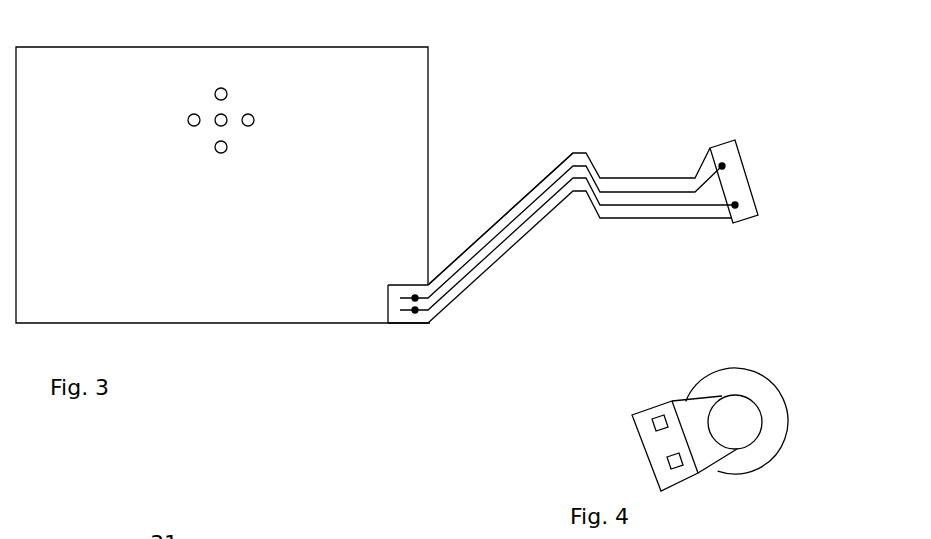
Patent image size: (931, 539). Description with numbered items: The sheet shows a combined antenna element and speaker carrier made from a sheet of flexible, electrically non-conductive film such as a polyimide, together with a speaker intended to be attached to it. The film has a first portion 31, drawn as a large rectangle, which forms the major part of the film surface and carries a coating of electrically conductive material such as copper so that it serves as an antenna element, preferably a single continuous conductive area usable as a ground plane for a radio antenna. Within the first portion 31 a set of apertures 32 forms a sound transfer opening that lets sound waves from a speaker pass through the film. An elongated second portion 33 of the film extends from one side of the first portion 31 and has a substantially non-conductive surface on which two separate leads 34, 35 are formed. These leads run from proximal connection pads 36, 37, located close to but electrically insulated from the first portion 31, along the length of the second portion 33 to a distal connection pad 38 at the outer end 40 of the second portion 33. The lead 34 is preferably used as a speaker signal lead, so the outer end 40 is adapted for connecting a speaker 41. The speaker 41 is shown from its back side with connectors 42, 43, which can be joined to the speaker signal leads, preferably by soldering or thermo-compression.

In FIG. 3, the first portion 31 is at (109, 63).
In FIG. 3, the aperture 32 is at (242, 101).
In FIG. 3, the second portion 33 is at (470, 283).
In FIG. 3, the first lead 34 is at (548, 205).
In FIG. 3, the second lead 35 is at (483, 245).
In FIG. 3, the proximal connection pad 36 is at (400, 308).
In FIG. 3, the proximal connection pad 37 is at (391, 293).
In FIG. 3, the distal connection pad 38 is at (747, 207).
In FIG. 3, the outer end 40 is at (748, 180).
In FIG. 4, the speaker 41 is at (750, 467).
In FIG. 4, the connector 42 is at (698, 473).
In FIG. 4, the connector 43 is at (652, 422).